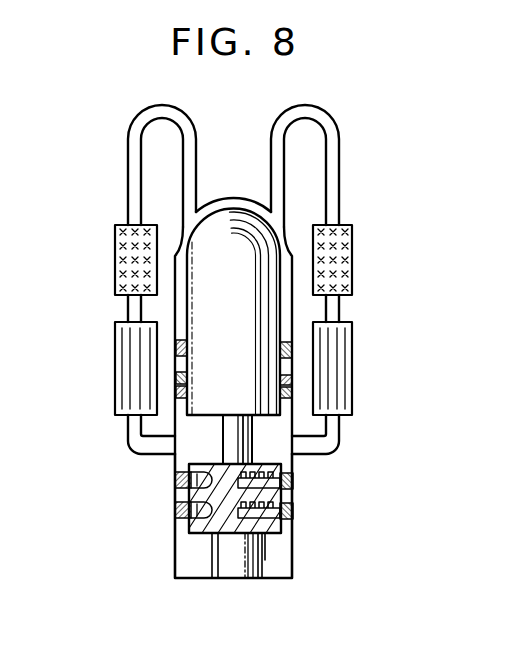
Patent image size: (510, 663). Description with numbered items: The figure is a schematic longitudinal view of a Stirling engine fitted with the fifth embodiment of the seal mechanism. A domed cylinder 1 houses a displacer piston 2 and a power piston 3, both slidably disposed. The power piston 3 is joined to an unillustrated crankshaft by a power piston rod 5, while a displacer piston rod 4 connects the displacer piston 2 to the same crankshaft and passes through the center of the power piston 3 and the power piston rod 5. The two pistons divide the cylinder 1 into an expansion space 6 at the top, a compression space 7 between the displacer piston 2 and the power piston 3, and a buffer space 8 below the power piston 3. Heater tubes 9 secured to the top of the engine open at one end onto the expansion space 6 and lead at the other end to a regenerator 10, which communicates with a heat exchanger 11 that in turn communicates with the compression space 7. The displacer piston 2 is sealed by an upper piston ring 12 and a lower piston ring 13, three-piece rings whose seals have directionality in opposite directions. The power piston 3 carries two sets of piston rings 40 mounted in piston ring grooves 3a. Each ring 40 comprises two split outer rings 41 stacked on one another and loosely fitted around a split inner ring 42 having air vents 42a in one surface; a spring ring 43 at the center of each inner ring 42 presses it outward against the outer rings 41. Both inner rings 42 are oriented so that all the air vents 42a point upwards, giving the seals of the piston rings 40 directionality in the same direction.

The domed cylinder 1 is at (177, 462).
The displacer piston 2 is at (228, 233).
The power piston 3 is at (268, 566).
The piston ring grooves 3a is at (230, 537).
The displacer piston rod 4 is at (222, 433).
The power piston rod 5 is at (212, 565).
The expansion space 6 is at (247, 203).
The compression space 7 is at (283, 421).
The buffer space 8 is at (283, 563).
The heater tubes 9 is at (338, 151).
The regenerator 10 is at (330, 252).
The heat exchanger 11 is at (338, 365).
The upper piston ring 12 is at (173, 347).
The lower piston ring 13 is at (173, 378).
The piston rings 40 is at (175, 482).
The split outer rings 41 is at (293, 483).
The split inner ring 42 is at (256, 477).
The air vents 42a is at (283, 468).
The spring ring 43 is at (190, 488).